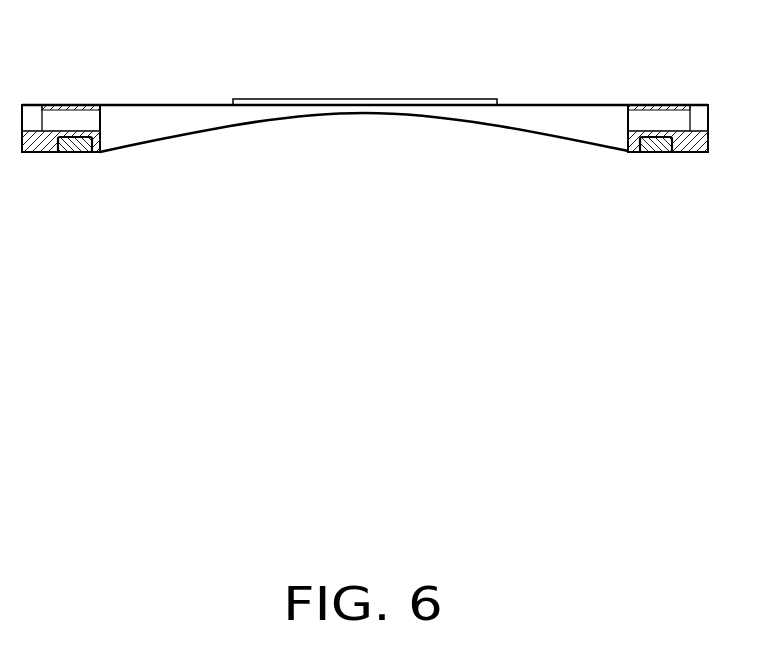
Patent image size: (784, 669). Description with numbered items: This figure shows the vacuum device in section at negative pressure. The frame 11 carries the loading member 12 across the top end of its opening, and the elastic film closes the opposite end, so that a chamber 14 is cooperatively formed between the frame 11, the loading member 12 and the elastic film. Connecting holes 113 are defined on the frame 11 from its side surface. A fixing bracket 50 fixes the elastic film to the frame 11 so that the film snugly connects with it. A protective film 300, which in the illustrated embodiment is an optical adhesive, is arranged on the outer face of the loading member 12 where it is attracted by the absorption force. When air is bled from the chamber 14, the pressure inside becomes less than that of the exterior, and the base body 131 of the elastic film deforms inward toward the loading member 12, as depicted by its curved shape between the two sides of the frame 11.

The frame 11 is at (692, 140).
The connecting holes 113 is at (668, 123).
The fixing bracket 50 is at (654, 143).
The loading member 12 is at (577, 104).
The protective film 300 is at (460, 103).
The base body 131 is at (137, 146).
The chamber 14 is at (580, 123).